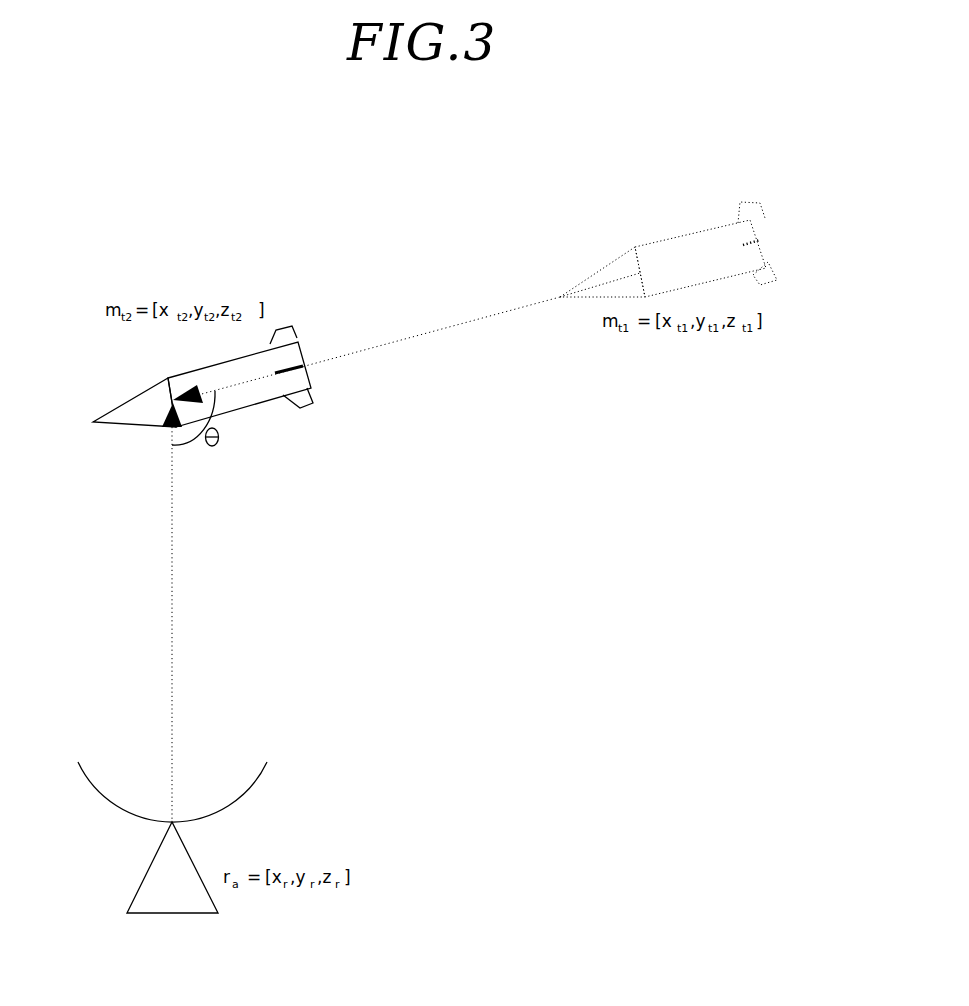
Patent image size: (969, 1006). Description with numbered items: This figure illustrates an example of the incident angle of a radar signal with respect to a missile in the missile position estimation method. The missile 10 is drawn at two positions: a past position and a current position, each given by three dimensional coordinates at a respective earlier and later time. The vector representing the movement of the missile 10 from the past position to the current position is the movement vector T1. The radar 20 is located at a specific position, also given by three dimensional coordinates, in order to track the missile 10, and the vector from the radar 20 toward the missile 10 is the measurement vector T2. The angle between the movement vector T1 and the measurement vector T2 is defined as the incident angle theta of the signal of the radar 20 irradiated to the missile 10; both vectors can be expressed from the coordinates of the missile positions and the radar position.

The missile 10 is at (268, 426).
The radar 20 is at (127, 883).
The movement vector T1 is at (379, 342).
The measurement vector T2 is at (153, 624).